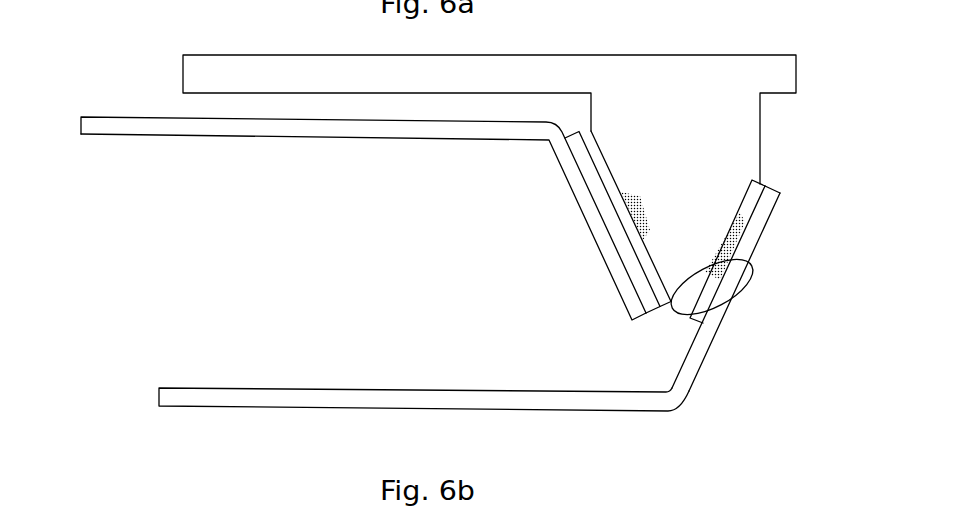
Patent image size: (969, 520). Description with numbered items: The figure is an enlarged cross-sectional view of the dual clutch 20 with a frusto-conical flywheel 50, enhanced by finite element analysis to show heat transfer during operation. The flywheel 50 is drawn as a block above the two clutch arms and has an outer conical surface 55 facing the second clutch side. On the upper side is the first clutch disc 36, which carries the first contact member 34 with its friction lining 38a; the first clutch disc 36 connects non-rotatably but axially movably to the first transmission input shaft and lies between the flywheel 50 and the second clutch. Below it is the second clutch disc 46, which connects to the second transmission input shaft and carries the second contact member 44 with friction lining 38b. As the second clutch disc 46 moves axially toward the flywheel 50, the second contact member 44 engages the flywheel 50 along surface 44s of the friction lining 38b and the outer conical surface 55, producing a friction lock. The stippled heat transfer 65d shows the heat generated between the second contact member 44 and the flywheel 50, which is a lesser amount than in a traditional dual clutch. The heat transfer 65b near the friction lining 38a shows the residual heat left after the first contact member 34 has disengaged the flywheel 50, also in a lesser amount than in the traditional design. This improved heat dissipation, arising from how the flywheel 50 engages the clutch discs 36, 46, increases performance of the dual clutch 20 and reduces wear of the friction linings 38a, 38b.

The dual clutch 20 is at (96, 233).
The flywheel 50 is at (697, 82).
The first clutch disc 36 is at (281, 137).
The first contact member 34 is at (596, 211).
The friction lining 38a is at (631, 249).
The heat transfer 65b is at (636, 207).
The heat transfer 65d is at (707, 252).
The outer conical surface 55 is at (668, 313).
The friction lining 38b is at (747, 233).
The surface 44s is at (743, 212).
The second contact member 44 is at (716, 346).
The second clutch disc 46 is at (557, 413).